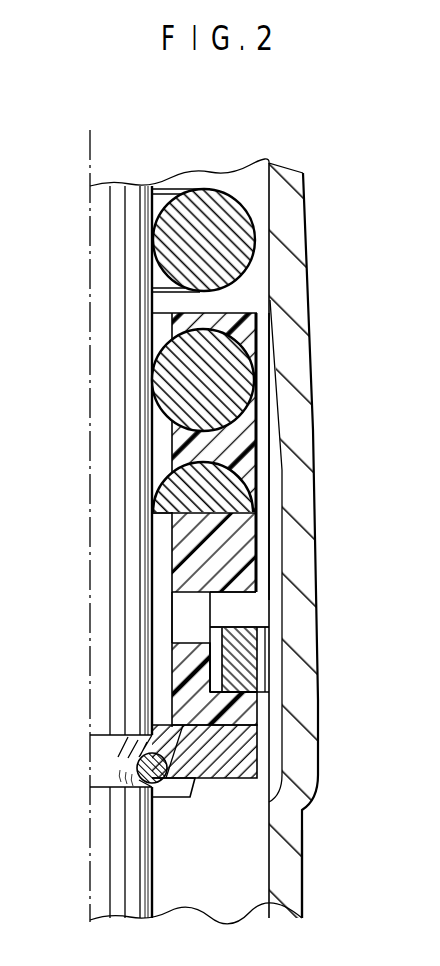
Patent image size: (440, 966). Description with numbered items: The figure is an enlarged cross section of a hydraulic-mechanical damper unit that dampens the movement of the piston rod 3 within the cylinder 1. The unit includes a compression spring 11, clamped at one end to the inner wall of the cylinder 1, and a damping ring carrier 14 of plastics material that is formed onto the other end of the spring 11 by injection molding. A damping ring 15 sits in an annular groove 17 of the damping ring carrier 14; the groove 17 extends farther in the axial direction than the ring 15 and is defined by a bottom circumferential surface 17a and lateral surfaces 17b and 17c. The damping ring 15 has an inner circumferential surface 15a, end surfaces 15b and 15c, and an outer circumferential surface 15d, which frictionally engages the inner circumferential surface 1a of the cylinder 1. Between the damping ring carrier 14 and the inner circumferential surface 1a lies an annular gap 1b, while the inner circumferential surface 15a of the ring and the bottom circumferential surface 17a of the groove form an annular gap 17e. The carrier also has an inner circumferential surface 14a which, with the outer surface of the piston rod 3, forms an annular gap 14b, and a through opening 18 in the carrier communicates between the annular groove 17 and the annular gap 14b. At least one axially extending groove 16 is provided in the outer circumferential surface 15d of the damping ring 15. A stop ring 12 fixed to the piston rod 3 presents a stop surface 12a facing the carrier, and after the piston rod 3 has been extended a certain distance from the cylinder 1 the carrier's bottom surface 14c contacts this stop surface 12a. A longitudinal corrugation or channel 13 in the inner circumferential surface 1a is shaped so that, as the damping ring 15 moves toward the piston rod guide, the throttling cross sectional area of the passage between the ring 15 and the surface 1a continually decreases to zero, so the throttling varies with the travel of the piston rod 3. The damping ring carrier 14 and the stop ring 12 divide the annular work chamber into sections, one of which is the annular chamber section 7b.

The cylinder 1 is at (300, 206).
The inner circumferential surface of the cylinder 1a is at (266, 852).
The annular gap 1b is at (263, 541).
The piston rod 3 is at (120, 190).
The annular chamber section 7b is at (257, 283).
The compression spring 11 is at (233, 207).
The stop ring 12 is at (252, 760).
The stop surface 12a is at (237, 720).
The longitudinal corrugation or channel 13 is at (277, 523).
The damping ring carrier 14 is at (248, 425).
The inner circumferential surface of the damping ring carrier 14a is at (172, 548).
The annular gap 14b is at (158, 525).
The bottom surface of the damping ring carrier 14c is at (190, 727).
The damping ring 15 is at (265, 670).
The inner circumferential surface of the damping ring 15a is at (213, 668).
The end surface of the damping ring 15b is at (240, 624).
The end surface of the damping ring 15c is at (235, 706).
The outer circumferential surface of the damping ring 15d is at (270, 642).
The groove 16 is at (245, 697).
The annular groove 17 is at (235, 612).
The bottom circumferential surface 17a is at (212, 615).
The lateral surface 17b is at (240, 597).
The lateral surface 17c is at (227, 717).
The annular gap 17e is at (205, 686).
The through opening 18 is at (173, 601).